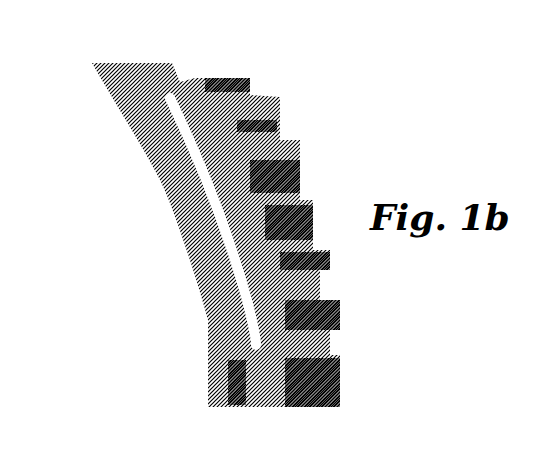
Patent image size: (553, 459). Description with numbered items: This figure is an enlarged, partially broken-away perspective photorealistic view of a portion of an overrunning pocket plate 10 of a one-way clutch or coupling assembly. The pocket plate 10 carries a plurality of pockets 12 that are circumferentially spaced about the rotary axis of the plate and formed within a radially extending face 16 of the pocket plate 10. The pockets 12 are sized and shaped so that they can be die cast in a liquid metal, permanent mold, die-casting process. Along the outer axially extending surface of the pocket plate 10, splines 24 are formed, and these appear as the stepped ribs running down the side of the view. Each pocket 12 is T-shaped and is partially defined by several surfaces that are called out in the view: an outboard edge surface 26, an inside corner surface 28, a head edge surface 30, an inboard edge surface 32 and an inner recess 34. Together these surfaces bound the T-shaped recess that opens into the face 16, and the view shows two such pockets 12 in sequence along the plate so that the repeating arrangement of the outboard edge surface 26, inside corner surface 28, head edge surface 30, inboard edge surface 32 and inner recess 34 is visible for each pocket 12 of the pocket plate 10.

The pocket plate 10 is at (352, 162).
The pockets 12 is at (158, 123).
The radially extending face 16 is at (200, 230).
The splines 24 is at (240, 70).
The outboard edge surface 26 is at (163, 108).
The inside corner surface 28 is at (168, 138).
The head edge surface 30 is at (183, 137).
The inboard edge surface 32 is at (172, 86).
The inner recess 34 is at (172, 108).